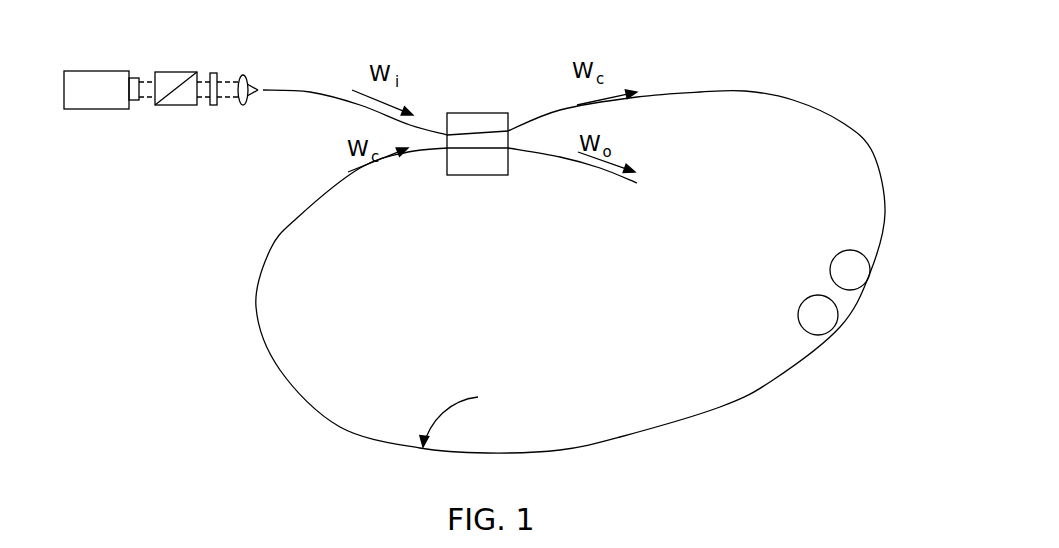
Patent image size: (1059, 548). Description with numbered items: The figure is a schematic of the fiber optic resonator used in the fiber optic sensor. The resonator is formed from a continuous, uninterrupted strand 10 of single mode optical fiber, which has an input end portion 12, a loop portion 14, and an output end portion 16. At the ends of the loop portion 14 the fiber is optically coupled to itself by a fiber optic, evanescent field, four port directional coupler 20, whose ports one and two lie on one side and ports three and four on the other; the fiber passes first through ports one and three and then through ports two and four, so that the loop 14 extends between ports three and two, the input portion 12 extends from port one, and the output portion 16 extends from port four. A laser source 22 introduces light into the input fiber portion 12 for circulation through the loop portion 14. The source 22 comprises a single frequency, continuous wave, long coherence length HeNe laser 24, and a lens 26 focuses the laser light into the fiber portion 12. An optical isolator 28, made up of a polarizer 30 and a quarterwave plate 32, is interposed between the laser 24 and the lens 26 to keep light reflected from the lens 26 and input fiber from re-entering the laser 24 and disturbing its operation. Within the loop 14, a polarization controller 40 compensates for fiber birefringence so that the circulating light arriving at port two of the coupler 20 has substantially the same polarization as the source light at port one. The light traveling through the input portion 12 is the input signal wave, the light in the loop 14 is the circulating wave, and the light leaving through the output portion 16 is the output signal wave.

The strand of single mode optical fiber 10 is at (570, 246).
The input end portion 12 is at (348, 103).
The loop portion 14 is at (723, 403).
The output end portion 16 is at (575, 162).
The directional coupler 20 is at (487, 113).
The laser source 22 is at (171, 93).
The laser 24 is at (117, 70).
The lens 26 is at (261, 65).
The optical isolator 28 is at (192, 78).
The polarizer 30 is at (182, 71).
The quarterwave plate 32 is at (222, 72).
The polarization controller 40 is at (857, 248).